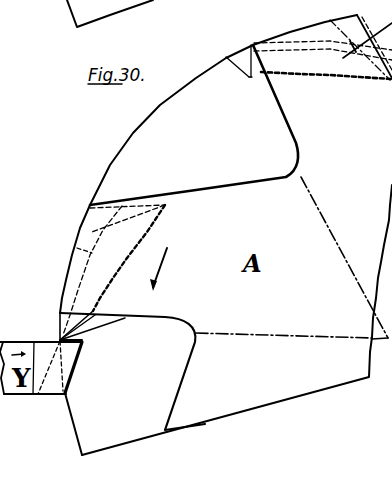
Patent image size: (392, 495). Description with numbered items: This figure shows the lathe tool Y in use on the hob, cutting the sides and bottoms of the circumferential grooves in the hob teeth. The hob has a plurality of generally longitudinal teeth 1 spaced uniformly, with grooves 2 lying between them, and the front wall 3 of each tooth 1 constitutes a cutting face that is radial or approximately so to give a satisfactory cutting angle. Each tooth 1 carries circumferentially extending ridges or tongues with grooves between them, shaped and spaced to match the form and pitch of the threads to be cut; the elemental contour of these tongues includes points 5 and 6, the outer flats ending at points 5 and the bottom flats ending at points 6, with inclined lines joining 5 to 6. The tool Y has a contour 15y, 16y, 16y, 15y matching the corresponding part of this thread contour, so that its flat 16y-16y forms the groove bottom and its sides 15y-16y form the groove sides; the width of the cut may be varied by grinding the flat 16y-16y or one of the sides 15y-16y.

The tooth 1 is at (113, 272).
The groove 2 is at (40, 467).
The front wall 3 is at (258, 112).
The contour point 5 is at (60, 338).
The contour point 6 is at (62, 338).
The contour point of tool Y 15y is at (59, 340).
The contour point of tool Y 16y is at (82, 340).